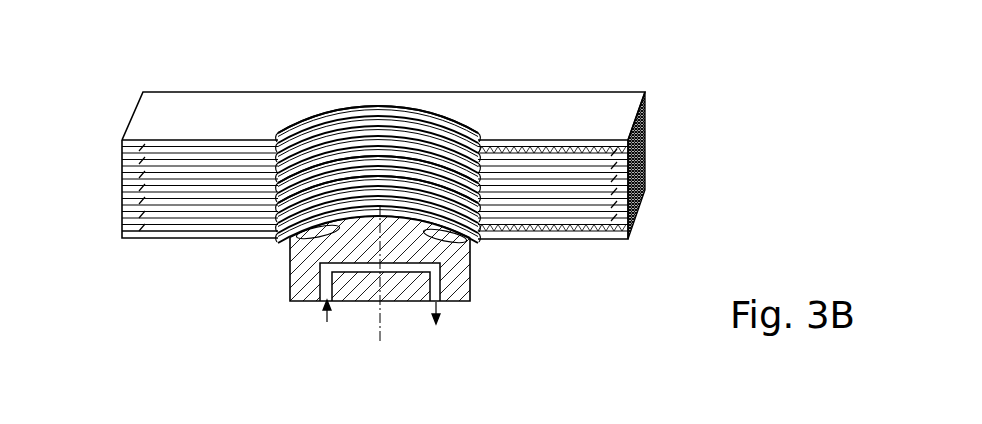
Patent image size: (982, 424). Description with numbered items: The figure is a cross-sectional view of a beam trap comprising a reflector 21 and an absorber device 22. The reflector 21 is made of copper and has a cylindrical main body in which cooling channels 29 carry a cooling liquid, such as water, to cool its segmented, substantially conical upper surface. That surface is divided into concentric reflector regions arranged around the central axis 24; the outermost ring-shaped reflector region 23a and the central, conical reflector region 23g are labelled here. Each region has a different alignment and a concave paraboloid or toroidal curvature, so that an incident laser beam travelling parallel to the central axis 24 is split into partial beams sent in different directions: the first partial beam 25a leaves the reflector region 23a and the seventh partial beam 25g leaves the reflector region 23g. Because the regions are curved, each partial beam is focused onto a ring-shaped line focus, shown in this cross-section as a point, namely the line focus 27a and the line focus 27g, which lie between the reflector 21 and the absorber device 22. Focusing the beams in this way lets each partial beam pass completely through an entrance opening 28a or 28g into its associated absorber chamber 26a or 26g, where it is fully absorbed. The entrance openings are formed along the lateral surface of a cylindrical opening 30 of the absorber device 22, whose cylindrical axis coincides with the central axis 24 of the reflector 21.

The absorber device 22 is at (128, 79).
The reflector 21 is at (300, 280).
The cylindrical opening 30 is at (375, 102).
The central axis 24 is at (380, 333).
The cooling channels 29 is at (325, 303).
The absorber chamber 26g is at (142, 146).
The absorber chamber 26a is at (146, 233).
The entrance opening 28g is at (327, 118).
The entrance opening 28a is at (472, 215).
The partial beam 25g is at (458, 201).
The line focus 27g is at (470, 185).
The reflector region 23a is at (290, 240).
The line focus 27a is at (470, 236).
The partial beam 25a is at (470, 245).
The reflector region 23g is at (383, 216).